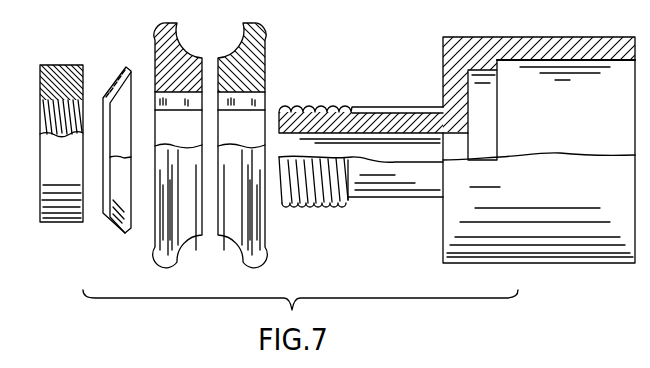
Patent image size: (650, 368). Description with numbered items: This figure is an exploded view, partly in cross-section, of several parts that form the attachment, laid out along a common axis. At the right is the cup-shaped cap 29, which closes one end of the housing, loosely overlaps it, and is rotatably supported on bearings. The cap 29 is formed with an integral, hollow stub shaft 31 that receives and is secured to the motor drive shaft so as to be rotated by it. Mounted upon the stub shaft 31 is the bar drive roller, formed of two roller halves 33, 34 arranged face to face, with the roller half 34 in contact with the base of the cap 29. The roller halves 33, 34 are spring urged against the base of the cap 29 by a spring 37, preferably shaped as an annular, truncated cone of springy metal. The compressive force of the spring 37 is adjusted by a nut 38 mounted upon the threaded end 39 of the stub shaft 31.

The cup-shaped cap 29 is at (508, 37).
The stub shaft 31 is at (383, 190).
The roller half 33 is at (153, 40).
The roller half 34 is at (265, 38).
The spring 37 is at (120, 228).
The nut 38 is at (67, 218).
The threaded end 39 is at (299, 107).